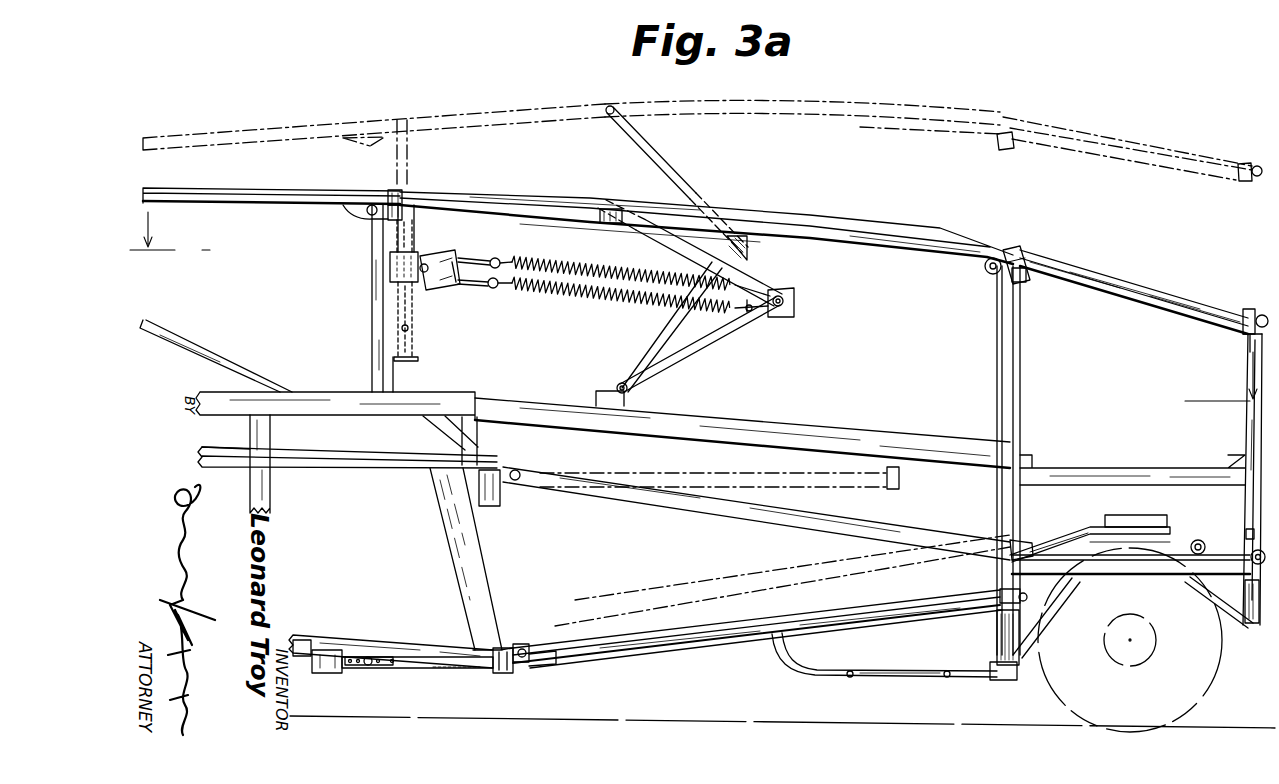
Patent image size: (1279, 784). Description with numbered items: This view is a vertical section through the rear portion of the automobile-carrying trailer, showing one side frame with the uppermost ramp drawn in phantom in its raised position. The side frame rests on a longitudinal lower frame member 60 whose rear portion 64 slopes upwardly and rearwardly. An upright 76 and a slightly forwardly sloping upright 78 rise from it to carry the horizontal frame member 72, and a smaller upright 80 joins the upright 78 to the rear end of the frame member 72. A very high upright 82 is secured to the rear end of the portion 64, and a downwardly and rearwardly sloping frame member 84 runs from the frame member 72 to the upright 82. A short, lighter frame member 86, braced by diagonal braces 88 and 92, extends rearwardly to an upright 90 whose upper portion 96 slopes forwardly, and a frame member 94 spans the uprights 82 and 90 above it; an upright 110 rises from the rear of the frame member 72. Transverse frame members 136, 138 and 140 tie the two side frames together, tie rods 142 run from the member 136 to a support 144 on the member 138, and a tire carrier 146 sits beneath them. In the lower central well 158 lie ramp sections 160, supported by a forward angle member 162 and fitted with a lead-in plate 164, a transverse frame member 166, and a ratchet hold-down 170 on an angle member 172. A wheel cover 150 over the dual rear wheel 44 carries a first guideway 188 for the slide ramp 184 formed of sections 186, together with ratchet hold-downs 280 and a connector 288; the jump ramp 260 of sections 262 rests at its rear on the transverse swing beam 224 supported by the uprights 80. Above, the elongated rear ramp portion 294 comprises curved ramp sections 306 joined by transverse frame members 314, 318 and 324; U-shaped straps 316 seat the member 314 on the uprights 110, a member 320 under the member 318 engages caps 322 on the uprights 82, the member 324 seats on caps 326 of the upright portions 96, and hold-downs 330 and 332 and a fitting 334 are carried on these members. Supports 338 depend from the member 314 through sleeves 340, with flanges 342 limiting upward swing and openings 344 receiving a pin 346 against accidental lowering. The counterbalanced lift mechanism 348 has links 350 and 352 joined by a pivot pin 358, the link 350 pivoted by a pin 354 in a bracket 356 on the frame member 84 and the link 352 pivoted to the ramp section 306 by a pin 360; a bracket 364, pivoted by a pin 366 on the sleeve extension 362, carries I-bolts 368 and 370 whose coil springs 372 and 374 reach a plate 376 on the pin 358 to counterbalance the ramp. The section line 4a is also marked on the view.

The section line 4a is at (693, 306).
The dual rear wheel 44 is at (1052, 696).
The longitudinal lower frame member 60 is at (365, 633).
The rear portion 64 is at (568, 633).
The horizontal frame member 72 is at (299, 392).
The upright 76 is at (268, 488).
The slightly forwardly sloping upright 78 is at (485, 540).
The smaller upright 80 is at (480, 437).
The very high upright 82 is at (1020, 377).
The slightly downwardly and rearwardly sloping frame member 84 is at (780, 425).
The frame member 86 is at (1113, 576).
The diagonal brace 88 is at (1055, 606).
The upright 90 is at (1250, 420).
The diagonal brace 92 is at (1210, 600).
The frame member 94 is at (1128, 473).
The upper portion 96 is at (1249, 356).
The upright 110 is at (374, 295).
The transverse frame member 136 is at (505, 674).
The heavy transverse frame member 138 is at (996, 632).
The heavy transverse frame member 140 is at (1258, 628).
The tie rods 142 is at (705, 648).
The support 144 is at (1000, 597).
The tire carrier 146 is at (897, 672).
The wheel cover 150 is at (1172, 530).
The lower central well 158 is at (305, 637).
The ramp sections 160 is at (400, 670).
The forward angle member 162 is at (495, 674).
The lead-in plate 164 is at (492, 645).
The transverse frame member 166 is at (322, 674).
The ratchet hold-down 170 is at (535, 643).
The angle member 172 is at (530, 668).
The slide ramp 184 is at (958, 503).
The slide ramp section 186 is at (776, 512).
The first guideway 188 is at (1078, 527).
The transverse swing beam 224 is at (809, 470).
The jump ramp 260 is at (360, 442).
The jump ramp sections 262 is at (231, 447).
The ratchet hold-downs 280 is at (1250, 557).
The connector 288 is at (1250, 530).
The elongated rear portion 294 is at (822, 93).
The ramp sections 306 is at (293, 122).
The transverse frame member 314 is at (404, 206).
The U-shaped strap 316 is at (368, 150).
The transverse frame member 318 is at (1038, 222).
The transverse frame member 320 is at (1026, 284).
The cap 322 is at (1019, 296).
The transverse frame member 324 is at (1243, 322).
The caps 326 is at (1244, 344).
The ratchet type hold-down 330 is at (372, 222).
The ratchet hold-down 332 is at (988, 274).
The fitting 334 is at (1263, 316).
The supports 338 is at (416, 152).
The sleeves 340 is at (390, 273).
The flanges 342 is at (418, 358).
The opening 344 is at (409, 328).
The pin 346 is at (396, 257).
The counterbalanced lift mechanism 348 is at (640, 317).
The link 350 is at (712, 341).
The link 352 is at (686, 172).
The pivot pin 354 is at (632, 389).
The bracket 356 is at (600, 394).
The pivot pin 358 is at (784, 303).
The pivot pin 360 is at (622, 208).
The rearwardly directed extension 362 is at (420, 290).
The bracket 364 is at (460, 260).
The pivot pin 366 is at (433, 282).
The I-bolt 368 is at (493, 290).
The I-bolt 370 is at (501, 257).
The coil spring 372 is at (548, 298).
The coil spring 374 is at (618, 268).
The plate 376 is at (796, 291).